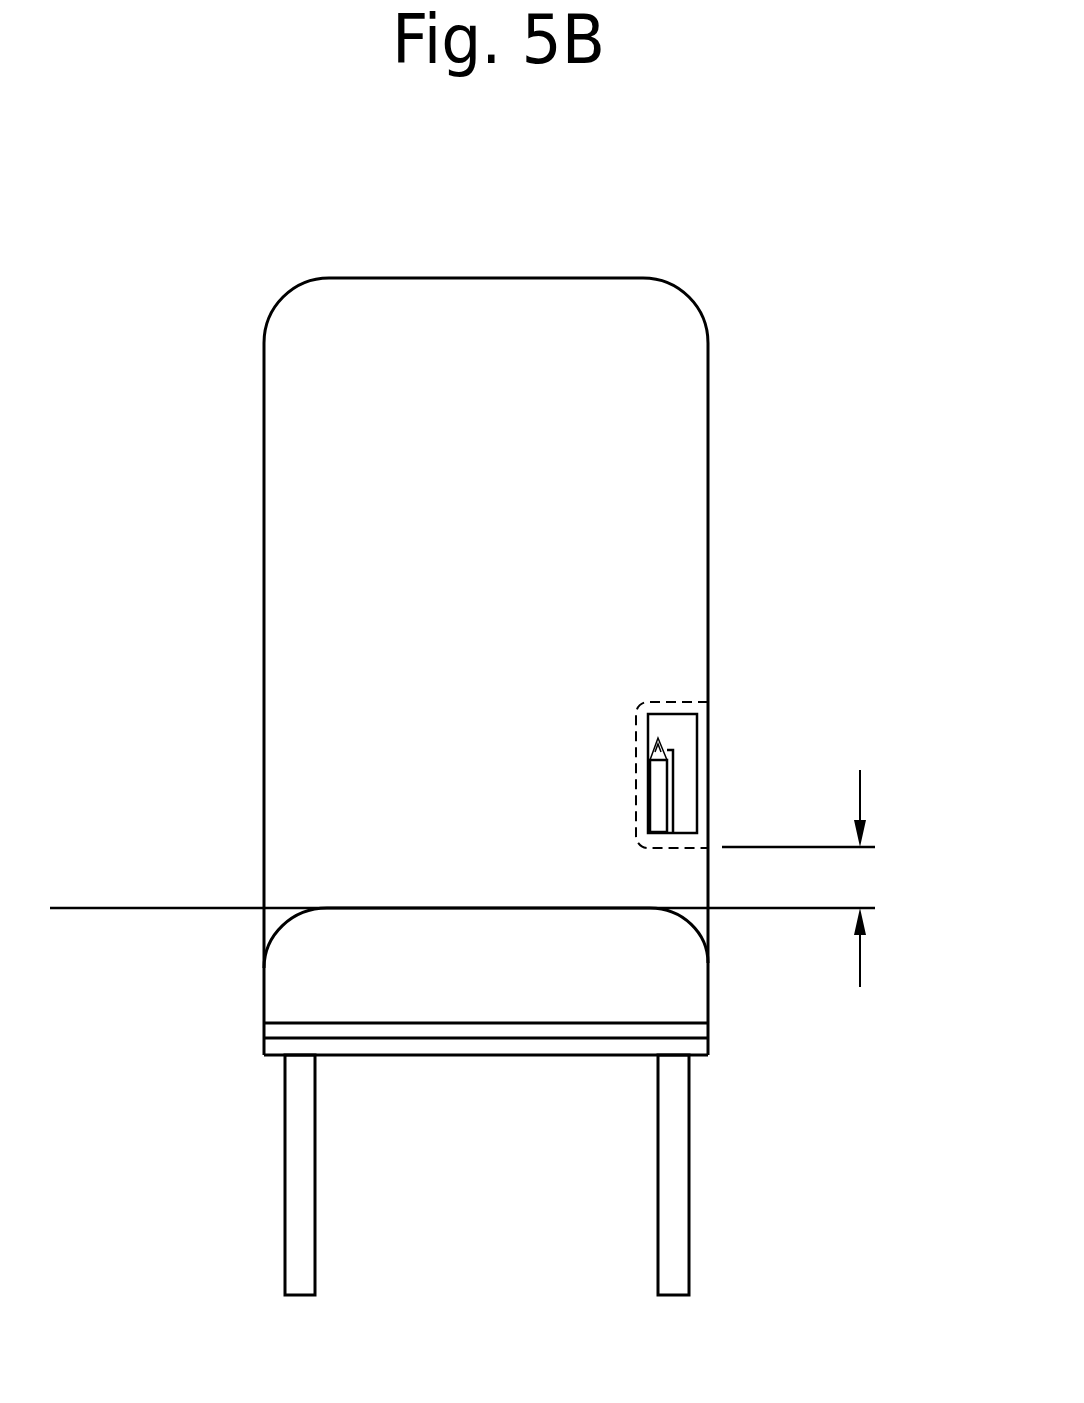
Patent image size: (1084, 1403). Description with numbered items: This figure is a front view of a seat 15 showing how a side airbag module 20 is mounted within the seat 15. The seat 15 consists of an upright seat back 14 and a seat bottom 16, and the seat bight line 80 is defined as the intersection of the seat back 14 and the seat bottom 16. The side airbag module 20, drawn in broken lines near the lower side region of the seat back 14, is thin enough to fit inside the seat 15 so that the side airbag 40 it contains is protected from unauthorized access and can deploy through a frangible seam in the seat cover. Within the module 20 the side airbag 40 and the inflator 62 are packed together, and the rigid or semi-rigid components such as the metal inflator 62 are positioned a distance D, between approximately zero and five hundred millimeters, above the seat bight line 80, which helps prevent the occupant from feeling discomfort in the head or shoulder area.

The seat back 14 is at (684, 477).
The seat 15 is at (462, 278).
The seat bottom 16 is at (297, 980).
The side airbag module 20 is at (638, 717).
The side airbag 40 is at (687, 733).
The inflator 62 is at (657, 793).
The seat bight line 80 is at (117, 908).
The distance D is at (862, 963).